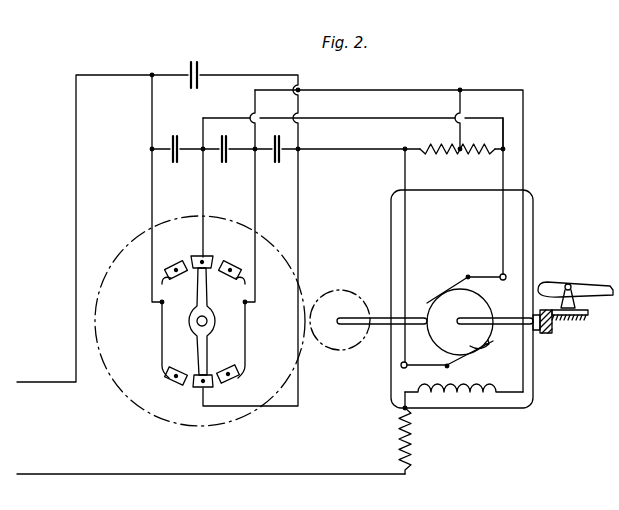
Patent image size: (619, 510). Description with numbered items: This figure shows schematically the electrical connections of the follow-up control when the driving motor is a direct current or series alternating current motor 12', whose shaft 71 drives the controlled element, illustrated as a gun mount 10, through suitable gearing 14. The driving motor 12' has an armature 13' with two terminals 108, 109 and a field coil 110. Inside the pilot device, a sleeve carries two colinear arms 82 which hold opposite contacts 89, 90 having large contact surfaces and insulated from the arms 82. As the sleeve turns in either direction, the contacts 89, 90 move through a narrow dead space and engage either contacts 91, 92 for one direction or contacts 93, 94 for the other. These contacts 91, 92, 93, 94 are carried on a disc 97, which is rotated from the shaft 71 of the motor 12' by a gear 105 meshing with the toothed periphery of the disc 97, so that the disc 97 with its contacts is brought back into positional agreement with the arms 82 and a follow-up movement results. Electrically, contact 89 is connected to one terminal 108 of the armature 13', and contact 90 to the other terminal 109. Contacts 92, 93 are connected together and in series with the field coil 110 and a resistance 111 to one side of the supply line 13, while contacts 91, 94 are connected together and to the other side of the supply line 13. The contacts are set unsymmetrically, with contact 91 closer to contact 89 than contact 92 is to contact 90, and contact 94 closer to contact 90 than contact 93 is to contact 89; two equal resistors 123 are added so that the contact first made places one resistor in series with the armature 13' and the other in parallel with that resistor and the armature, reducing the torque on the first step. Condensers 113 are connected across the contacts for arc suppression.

The supply line 13 is at (211, 274).
The condensers 113 is at (199, 72).
The resistors 123 is at (486, 156).
The disc 97 is at (306, 283).
The contact 91 is at (173, 262).
The contact 89 is at (206, 258).
The contact 93 is at (241, 268).
The contact 94 is at (165, 373).
The contact 90 is at (196, 386).
The contact 92 is at (240, 375).
The arms 82 is at (208, 300).
The gear 105 is at (367, 301).
The shaft 71 is at (413, 318).
The driving motor 12' is at (483, 299).
The armature 13' is at (466, 330).
The terminal 108 is at (500, 276).
The terminal 109 is at (401, 366).
The field coil 110 is at (468, 399).
The resistance 111 is at (400, 444).
The gearing 14 is at (553, 332).
The gun mount 10 is at (589, 283).